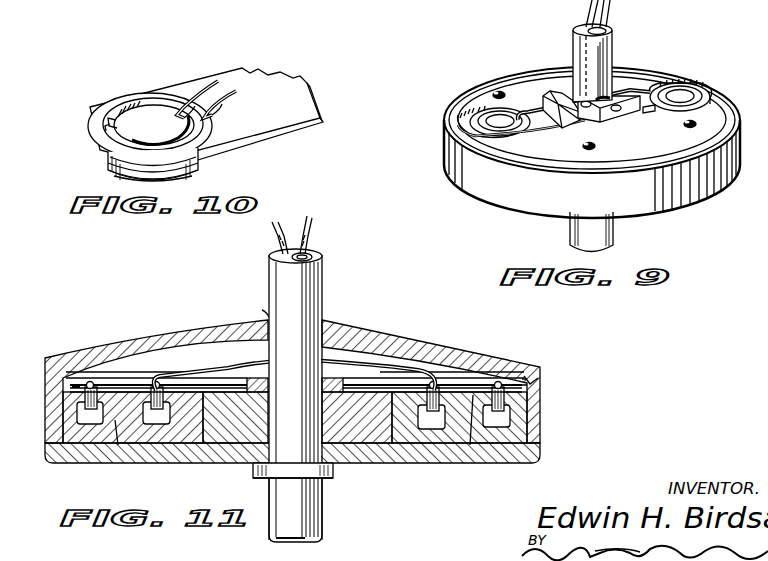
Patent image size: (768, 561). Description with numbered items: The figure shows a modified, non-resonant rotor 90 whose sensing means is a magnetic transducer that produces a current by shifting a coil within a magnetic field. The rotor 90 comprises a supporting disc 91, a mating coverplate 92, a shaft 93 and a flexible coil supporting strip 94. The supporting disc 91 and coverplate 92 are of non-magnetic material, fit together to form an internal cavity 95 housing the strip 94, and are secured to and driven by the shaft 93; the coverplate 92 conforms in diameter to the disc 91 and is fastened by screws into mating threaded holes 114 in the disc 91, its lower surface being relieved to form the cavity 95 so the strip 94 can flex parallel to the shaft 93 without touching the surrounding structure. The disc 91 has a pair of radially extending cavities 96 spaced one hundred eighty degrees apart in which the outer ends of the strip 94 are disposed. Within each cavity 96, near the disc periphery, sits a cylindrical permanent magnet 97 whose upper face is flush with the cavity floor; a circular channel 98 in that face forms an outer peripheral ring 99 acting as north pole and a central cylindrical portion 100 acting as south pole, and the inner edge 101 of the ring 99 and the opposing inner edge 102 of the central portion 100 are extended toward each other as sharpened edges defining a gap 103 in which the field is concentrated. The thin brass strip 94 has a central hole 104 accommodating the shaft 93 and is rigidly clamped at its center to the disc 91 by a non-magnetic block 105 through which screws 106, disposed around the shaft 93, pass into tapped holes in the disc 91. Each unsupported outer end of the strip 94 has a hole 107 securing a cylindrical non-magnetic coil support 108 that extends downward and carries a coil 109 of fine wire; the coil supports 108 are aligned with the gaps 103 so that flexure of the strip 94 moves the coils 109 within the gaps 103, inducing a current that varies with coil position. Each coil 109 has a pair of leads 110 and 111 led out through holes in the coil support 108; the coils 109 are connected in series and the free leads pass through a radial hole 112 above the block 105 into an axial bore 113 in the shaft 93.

In FIG. 11, the rotor 90 is at (355, 311).
In FIG. 9, the supporting disc 91 is at (592, 159).
In FIG. 11, the supporting disc 91 is at (540, 438).
In FIG. 11, the coverplate 92 is at (386, 332).
In FIG. 9, the shaft 93 is at (612, 52).
In FIG. 11, the shaft 93 is at (322, 290).
In FIG. 10, the coil supporting strip 94 is at (264, 98).
In FIG. 9, the coil supporting strip 94 is at (702, 96).
In FIG. 11, the coil supporting strip 94 is at (80, 378).
In FIG. 11, the internal cavity 95 is at (185, 334).
In FIG. 9, the radially extending cavities 96 is at (474, 104).
In FIG. 11, the radially extending cavities 96 is at (68, 388).
In FIG. 11, the cylindrical permanent magnet 97 is at (65, 434).
In FIG. 11, the circular channel 98 is at (145, 414).
In FIG. 11, the outer peripheral ring 99 is at (62, 412).
In FIG. 11, the central cylindrical portion 100 is at (118, 460).
In FIG. 11, the inner edge of the peripheral ring 101 is at (538, 378).
In FIG. 11, the inner edge of the central cylindrical portion 102 is at (520, 378).
In FIG. 11, the gap 103 is at (182, 372).
In FIG. 11, the central hole 104 is at (395, 364).
In FIG. 9, the non-magnetic block 105 is at (572, 90).
In FIG. 9, the screws 106 is at (548, 94).
In FIG. 11, the hole 107 is at (92, 381).
In FIG. 10, the coil support 108 is at (121, 105).
In FIG. 9, the coil support 108 is at (504, 112).
In FIG. 10, the coil 109 is at (198, 172).
In FIG. 10, the lead 110 is at (205, 83).
In FIG. 9, the lead 110 is at (590, 18).
In FIG. 11, the lead 110 is at (278, 236).
In FIG. 10, the lead 111 is at (226, 102).
In FIG. 9, the lead 111 is at (606, 16).
In FIG. 11, the lead 111 is at (309, 222).
In FIG. 11, the radial hole 112 is at (265, 332).
In FIG. 11, the axial bore 113 is at (312, 256).
In FIG. 9, the threaded holes 114 is at (618, 146).